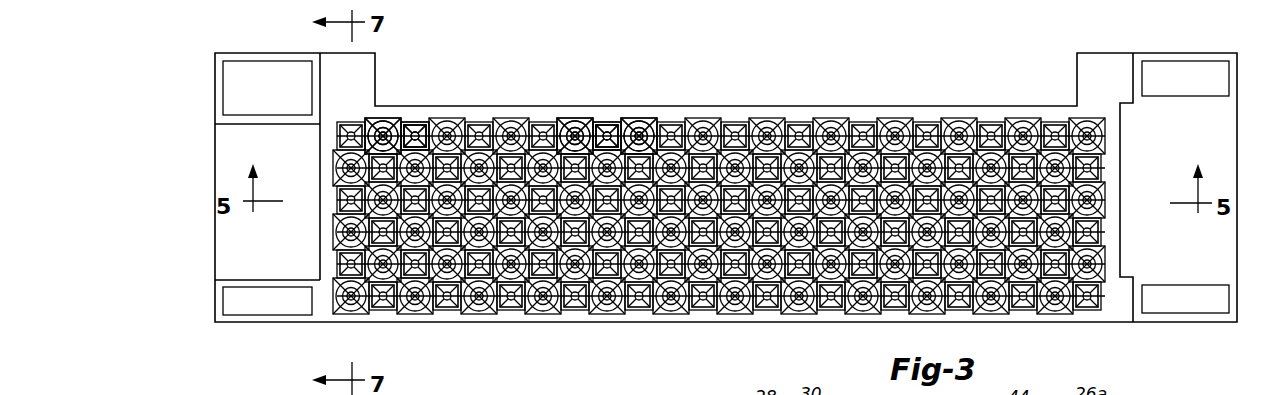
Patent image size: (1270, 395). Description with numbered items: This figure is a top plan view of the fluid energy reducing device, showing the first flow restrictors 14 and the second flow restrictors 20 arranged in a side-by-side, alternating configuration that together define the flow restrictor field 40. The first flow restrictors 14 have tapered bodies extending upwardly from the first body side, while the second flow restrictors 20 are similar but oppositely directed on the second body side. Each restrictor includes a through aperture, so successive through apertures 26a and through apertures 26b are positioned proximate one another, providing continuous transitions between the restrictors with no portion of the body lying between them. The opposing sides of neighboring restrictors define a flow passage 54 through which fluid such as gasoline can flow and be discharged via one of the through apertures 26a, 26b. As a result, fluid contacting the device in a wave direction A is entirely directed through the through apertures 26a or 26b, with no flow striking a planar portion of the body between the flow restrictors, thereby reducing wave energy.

The flow restrictor field 40 is at (811, 69).
The wave direction A is at (493, 346).
The first flow restrictor 14 is at (386, 120).
The second flow restrictor 20 is at (419, 124).
The through aperture 26a is at (575, 134).
The flow passage 54 is at (604, 130).
The through aperture 26b is at (620, 136).